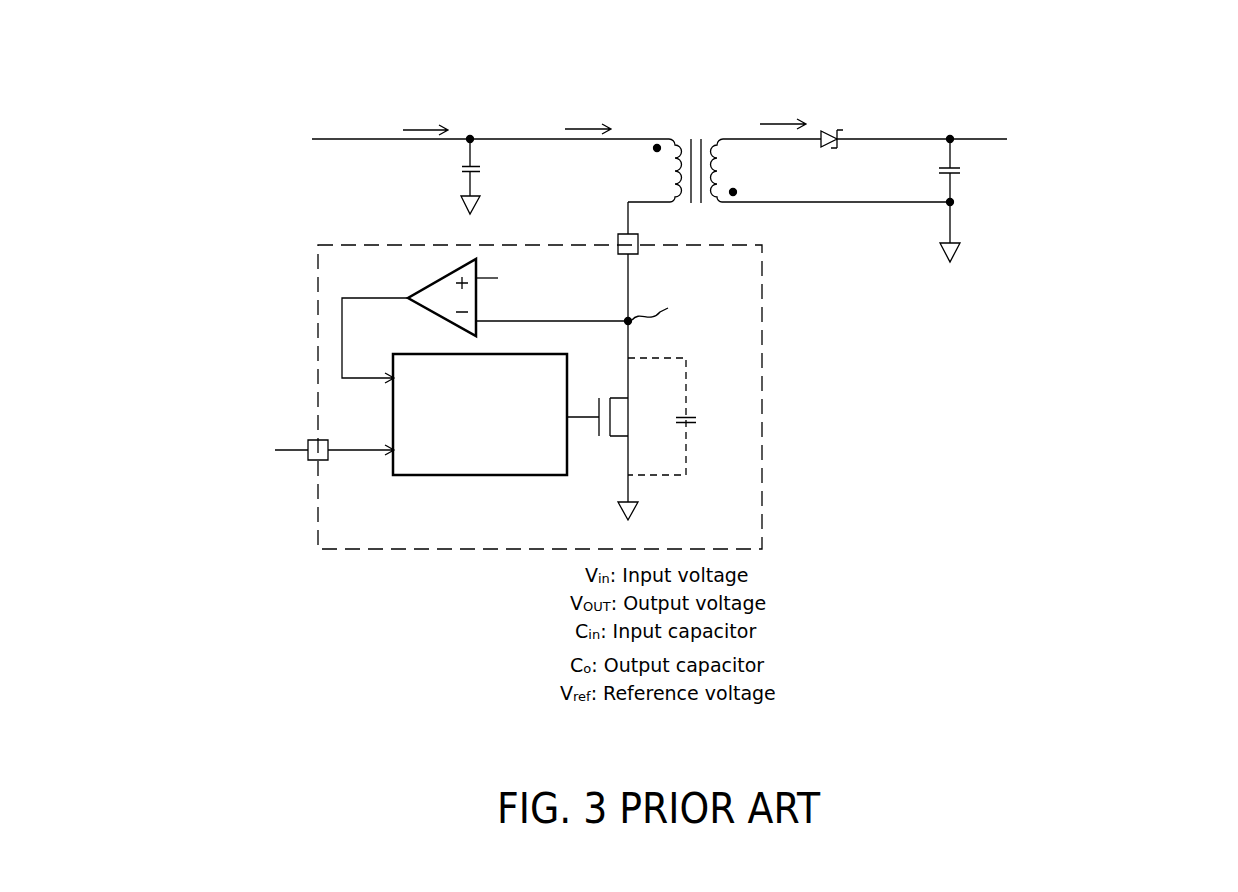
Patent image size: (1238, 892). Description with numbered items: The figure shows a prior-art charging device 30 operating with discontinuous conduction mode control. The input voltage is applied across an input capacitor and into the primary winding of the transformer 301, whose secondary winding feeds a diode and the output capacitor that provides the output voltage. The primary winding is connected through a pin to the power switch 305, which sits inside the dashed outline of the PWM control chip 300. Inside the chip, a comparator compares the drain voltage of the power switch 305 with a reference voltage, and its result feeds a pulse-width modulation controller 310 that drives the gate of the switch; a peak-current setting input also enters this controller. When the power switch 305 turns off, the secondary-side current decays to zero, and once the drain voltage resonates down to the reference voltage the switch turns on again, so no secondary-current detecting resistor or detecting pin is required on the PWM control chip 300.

The charging device 30 is at (1114, 128).
The PWM control chip 300 is at (762, 428).
The transformer 301 is at (789, 168).
The power switch 305 is at (620, 438).
The pulse-width modulation controller 310 is at (473, 477).